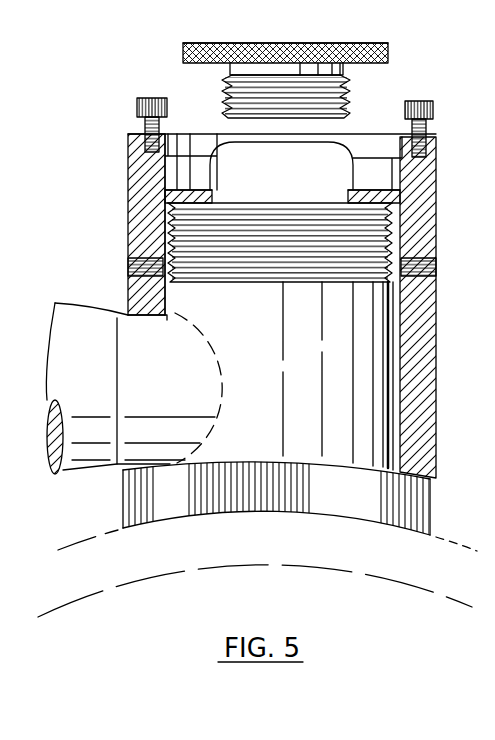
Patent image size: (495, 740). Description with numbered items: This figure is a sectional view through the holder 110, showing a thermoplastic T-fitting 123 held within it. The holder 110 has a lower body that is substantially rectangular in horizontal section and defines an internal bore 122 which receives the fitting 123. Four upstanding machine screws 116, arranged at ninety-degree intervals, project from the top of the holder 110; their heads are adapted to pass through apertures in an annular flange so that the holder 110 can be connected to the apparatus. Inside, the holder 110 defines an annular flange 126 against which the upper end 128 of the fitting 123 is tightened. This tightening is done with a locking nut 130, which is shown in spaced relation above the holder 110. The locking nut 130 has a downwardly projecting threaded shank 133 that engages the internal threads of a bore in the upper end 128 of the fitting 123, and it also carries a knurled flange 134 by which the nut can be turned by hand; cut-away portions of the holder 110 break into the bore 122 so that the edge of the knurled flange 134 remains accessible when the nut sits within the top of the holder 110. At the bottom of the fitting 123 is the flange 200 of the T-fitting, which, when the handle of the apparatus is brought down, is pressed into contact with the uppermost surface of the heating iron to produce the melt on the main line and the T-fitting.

The holder 110 is at (128, 192).
The machine screws 116 is at (137, 107).
The internal bore 122 is at (398, 328).
The thermoplastic fitting 123 is at (297, 395).
The annular flange 126 is at (373, 192).
The upper end of the fitting 128 is at (280, 202).
The locking nut 130 is at (269, 45).
The threaded shank 133 is at (327, 95).
The knurled flange 134 is at (358, 44).
The flange of the T-fitting 200 is at (368, 507).